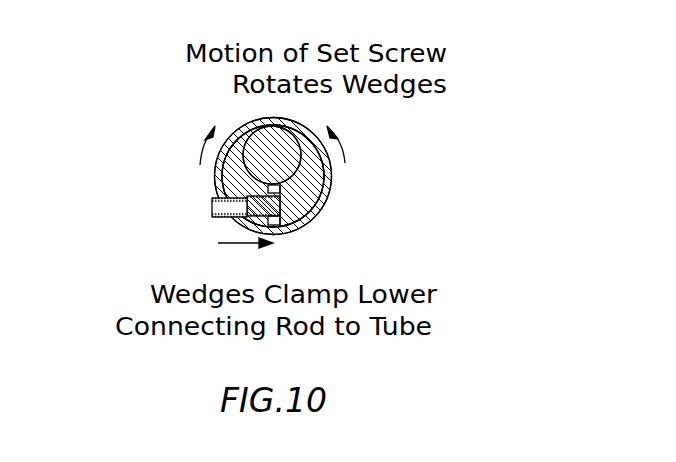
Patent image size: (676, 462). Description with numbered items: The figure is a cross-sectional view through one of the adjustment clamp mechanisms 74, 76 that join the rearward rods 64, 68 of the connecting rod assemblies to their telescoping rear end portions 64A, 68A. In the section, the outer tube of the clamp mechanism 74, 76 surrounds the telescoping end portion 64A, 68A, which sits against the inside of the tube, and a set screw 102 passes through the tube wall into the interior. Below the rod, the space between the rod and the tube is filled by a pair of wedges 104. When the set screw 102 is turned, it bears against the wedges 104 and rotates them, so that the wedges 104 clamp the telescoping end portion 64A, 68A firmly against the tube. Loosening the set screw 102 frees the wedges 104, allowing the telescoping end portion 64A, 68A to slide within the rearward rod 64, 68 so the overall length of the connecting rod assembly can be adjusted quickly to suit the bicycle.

The rearward rod 64 is at (184, 134).
The rearward rod 68 is at (245, 127).
The telescoping rear end portion 64A is at (421, 112).
The telescoping rear end portion 68A is at (282, 130).
The adjustment clamp mechanism 74 is at (356, 176).
The adjustment clamp mechanism 76 is at (362, 178).
The set screw 102 is at (213, 207).
The wedges 104 is at (237, 175).